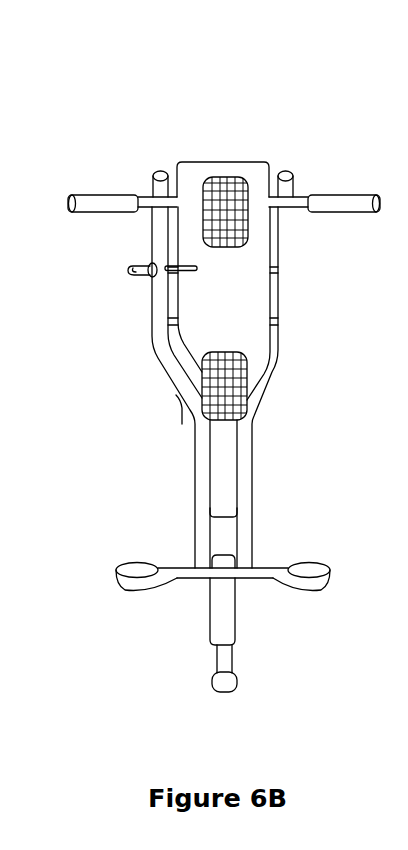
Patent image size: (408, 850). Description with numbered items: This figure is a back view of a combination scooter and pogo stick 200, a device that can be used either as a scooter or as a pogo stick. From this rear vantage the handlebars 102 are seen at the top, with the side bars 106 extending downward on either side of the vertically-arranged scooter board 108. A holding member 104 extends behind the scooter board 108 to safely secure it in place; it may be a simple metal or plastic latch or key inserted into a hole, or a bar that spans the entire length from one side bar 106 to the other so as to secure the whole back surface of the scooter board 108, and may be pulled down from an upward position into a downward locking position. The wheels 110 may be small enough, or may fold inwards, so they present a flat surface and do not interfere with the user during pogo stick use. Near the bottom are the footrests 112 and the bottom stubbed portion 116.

The combination scooter and pogo stick 200 is at (287, 68).
The handlebars 102 is at (337, 195).
The holding member 104 is at (137, 275).
The side bars 106 is at (282, 172).
The scooter board 108 is at (262, 272).
The wheels 110 is at (200, 217).
The footrests 112 is at (313, 592).
The bottom stubbed portion 116 is at (210, 623).